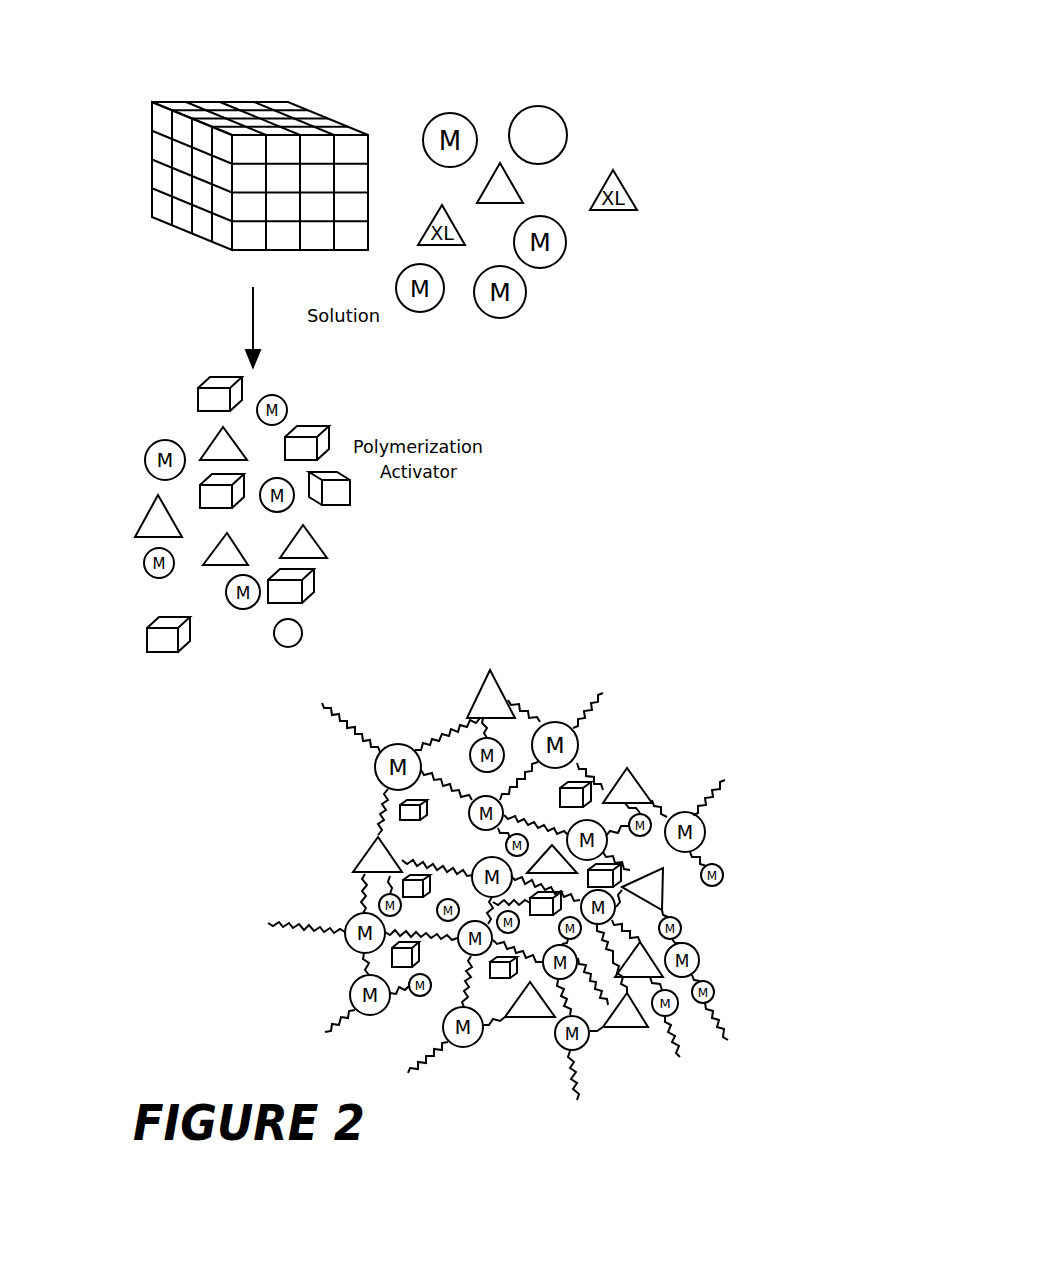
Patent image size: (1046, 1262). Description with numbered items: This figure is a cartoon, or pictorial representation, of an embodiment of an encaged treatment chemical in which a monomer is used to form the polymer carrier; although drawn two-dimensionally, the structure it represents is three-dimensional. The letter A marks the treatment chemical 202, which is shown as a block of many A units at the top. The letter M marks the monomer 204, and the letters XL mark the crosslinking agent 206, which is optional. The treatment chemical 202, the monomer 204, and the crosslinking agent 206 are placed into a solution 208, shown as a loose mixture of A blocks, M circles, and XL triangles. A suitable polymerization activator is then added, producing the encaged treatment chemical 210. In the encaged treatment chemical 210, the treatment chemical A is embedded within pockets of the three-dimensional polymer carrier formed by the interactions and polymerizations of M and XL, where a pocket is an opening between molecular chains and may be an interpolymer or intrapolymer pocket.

The treatment chemical 202 is at (218, 80).
The monomer 204 is at (553, 119).
The crosslinking agent 206 is at (514, 188).
The solution 208 is at (216, 658).
The encaged treatment chemical 210 is at (522, 643).